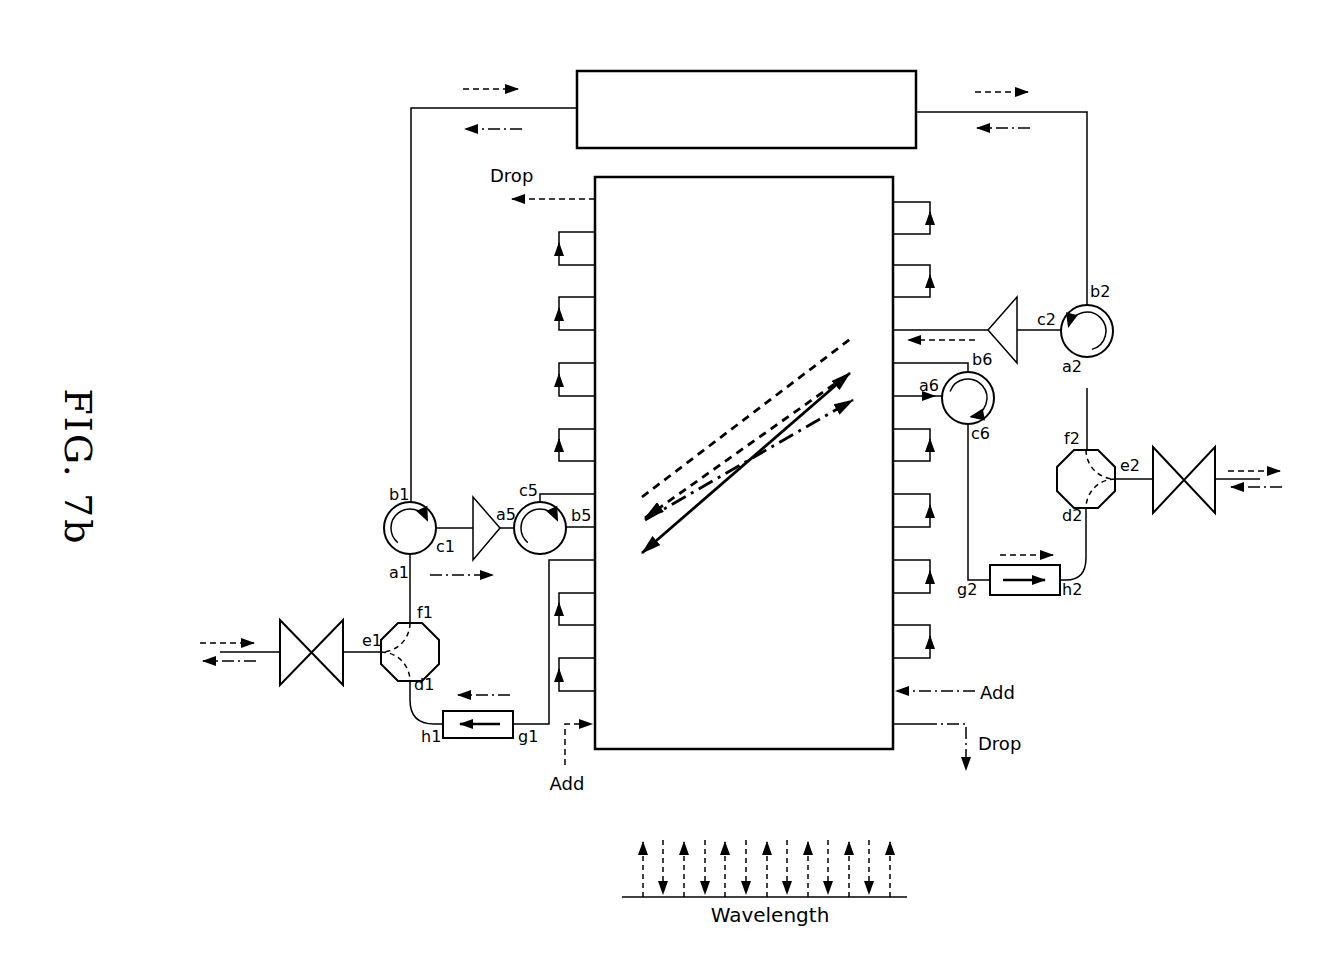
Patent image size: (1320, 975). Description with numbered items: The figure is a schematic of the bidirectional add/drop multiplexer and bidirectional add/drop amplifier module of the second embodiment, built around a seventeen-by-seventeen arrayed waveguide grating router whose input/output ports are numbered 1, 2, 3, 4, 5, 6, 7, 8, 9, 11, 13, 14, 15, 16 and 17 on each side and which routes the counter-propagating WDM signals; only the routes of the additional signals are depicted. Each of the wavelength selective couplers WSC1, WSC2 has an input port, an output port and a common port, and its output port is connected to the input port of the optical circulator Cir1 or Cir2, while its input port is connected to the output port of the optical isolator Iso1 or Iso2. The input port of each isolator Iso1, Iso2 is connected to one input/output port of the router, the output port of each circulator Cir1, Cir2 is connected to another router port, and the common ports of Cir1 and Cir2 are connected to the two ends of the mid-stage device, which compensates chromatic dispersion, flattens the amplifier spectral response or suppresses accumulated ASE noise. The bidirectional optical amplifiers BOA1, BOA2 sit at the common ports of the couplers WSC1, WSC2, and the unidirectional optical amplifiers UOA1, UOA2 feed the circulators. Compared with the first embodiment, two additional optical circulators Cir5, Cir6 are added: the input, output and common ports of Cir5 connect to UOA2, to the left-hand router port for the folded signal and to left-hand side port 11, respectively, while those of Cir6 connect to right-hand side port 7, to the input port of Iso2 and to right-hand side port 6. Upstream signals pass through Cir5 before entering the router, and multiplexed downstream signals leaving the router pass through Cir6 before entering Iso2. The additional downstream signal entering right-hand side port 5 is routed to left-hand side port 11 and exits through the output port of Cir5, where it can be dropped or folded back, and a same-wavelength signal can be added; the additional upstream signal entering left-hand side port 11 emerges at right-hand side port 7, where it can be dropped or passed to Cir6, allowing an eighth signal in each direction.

The port 1 is at (746, 199).
The port 2 is at (746, 232).
The port 3 is at (746, 265).
The port 4 is at (746, 297).
The right-hand side port 5 of the AWGR 5 is at (746, 330).
The right-hand side port 6 of the AWGR 6 is at (746, 363).
The right-hand side port 7 of the AWGR 7 is at (746, 396).
The port 8 is at (746, 429).
The port 9 is at (746, 461).
The left-hand side port 11 of the AWGR 11 is at (745, 527).
The port 13 is at (745, 593).
The port 14 is at (745, 625).
The port 15 is at (745, 658).
The port 16 is at (745, 691).
The port 17 is at (745, 724).
The optical circulator Cir1 is at (386, 528).
The optical circulator Cir2 is at (1105, 331).
The optical circulator Cir5 is at (536, 541).
The optical circulator Cir6 is at (984, 399).
The unidirectional optical amplifier UOA1 is at (981, 330).
The unidirectional optical amplifier UOA2 is at (479, 517).
The wavelength selective coupler WSC1 is at (402, 662).
The wavelength selective coupler WSC2 is at (1060, 479).
The bidirectional optical amplifier BOA1 is at (311, 663).
The bidirectional optical amplifier BOA2 is at (1184, 493).
The optical isolator Iso1 is at (478, 738).
The optical isolator Iso2 is at (1025, 592).